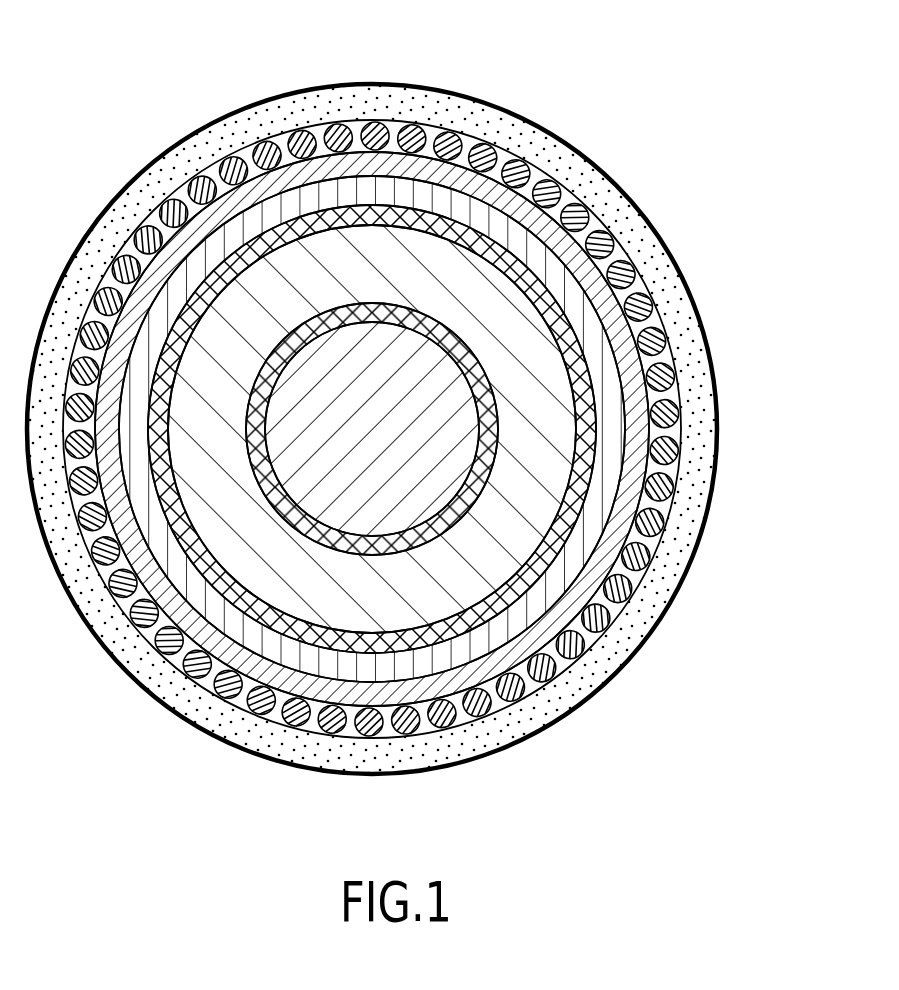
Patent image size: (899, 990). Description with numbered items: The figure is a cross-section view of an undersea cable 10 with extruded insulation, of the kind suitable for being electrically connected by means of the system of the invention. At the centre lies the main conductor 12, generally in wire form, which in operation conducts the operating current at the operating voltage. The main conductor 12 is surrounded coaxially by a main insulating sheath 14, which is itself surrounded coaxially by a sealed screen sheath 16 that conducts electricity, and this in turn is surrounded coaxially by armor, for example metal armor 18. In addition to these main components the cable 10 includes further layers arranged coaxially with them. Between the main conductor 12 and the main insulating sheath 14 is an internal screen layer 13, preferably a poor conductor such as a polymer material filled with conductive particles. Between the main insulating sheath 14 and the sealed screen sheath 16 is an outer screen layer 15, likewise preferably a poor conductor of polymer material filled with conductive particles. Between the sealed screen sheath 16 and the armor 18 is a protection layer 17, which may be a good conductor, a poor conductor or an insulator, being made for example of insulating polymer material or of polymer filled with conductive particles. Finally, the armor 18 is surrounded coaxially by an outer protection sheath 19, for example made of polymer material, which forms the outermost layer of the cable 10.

The undersea cable 10 is at (400, 393).
The main conductor 12 is at (417, 463).
The internal screen layer 13 is at (480, 470).
The main insulating sheath 14 is at (533, 353).
The outer screen layer 15 is at (538, 302).
The sealed screen sheath 16 is at (532, 242).
The protection layer 17 is at (483, 185).
The metal armor 18 is at (418, 133).
The outer protection sheath 19 is at (362, 97).